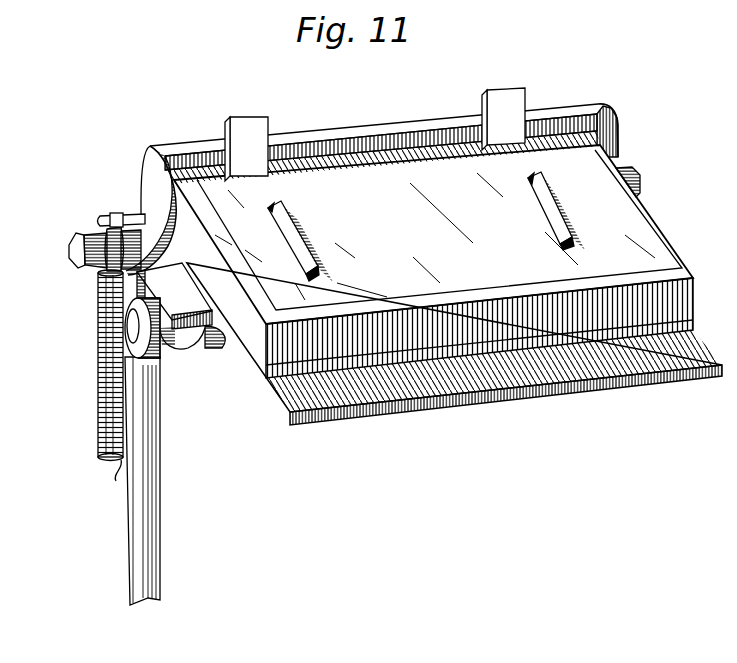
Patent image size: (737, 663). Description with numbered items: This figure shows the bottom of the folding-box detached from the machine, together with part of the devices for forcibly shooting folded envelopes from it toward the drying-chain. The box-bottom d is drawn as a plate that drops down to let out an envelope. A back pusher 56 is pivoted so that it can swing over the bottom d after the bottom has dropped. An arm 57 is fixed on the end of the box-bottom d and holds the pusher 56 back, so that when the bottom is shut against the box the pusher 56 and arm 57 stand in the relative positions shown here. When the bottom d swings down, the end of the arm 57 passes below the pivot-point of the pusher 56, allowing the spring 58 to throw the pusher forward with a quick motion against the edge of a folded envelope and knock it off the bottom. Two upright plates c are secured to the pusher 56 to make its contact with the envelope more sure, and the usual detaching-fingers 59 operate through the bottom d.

The back pusher 56 is at (387, 117).
The arm 57 is at (181, 306).
The spring 58 is at (100, 346).
The detaching-fingers 59 is at (287, 205).
The upright plates c is at (262, 130).
The box-bottom d is at (429, 255).